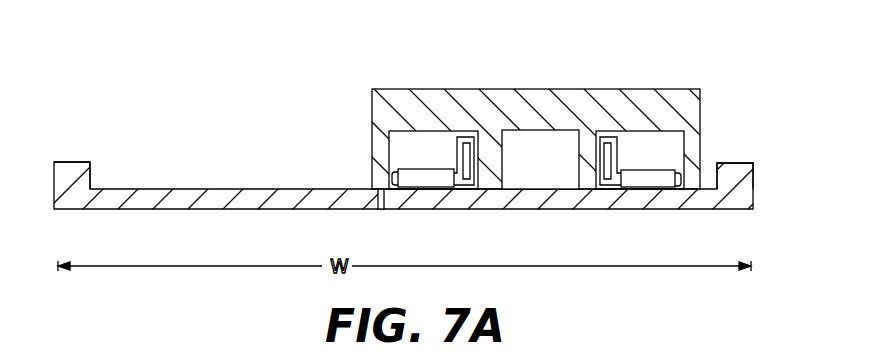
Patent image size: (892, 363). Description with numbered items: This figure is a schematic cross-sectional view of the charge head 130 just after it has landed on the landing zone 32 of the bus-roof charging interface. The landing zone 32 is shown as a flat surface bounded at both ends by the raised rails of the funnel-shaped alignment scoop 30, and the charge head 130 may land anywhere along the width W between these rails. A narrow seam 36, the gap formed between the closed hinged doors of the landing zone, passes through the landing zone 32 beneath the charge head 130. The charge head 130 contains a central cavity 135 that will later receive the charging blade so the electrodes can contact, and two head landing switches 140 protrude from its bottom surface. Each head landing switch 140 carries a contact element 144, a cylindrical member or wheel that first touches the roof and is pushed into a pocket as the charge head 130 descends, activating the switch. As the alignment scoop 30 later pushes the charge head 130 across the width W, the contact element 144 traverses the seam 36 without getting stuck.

The alignment scoop 30 is at (73, 168).
The landing zone 32 is at (257, 189).
The seam 36 is at (381, 212).
The charge head 130 is at (612, 105).
The central cavity 135 is at (531, 143).
The head landing switch 140 is at (421, 163).
The contact element 144 is at (647, 178).